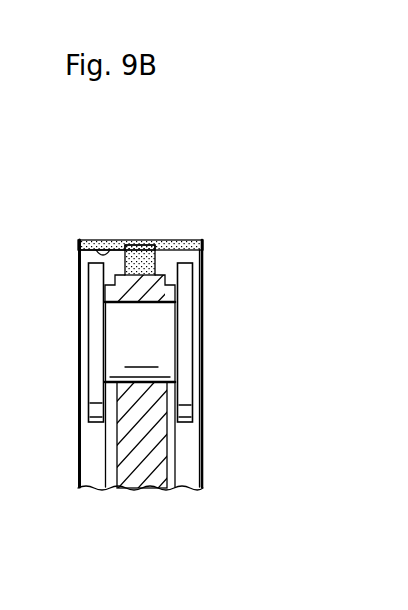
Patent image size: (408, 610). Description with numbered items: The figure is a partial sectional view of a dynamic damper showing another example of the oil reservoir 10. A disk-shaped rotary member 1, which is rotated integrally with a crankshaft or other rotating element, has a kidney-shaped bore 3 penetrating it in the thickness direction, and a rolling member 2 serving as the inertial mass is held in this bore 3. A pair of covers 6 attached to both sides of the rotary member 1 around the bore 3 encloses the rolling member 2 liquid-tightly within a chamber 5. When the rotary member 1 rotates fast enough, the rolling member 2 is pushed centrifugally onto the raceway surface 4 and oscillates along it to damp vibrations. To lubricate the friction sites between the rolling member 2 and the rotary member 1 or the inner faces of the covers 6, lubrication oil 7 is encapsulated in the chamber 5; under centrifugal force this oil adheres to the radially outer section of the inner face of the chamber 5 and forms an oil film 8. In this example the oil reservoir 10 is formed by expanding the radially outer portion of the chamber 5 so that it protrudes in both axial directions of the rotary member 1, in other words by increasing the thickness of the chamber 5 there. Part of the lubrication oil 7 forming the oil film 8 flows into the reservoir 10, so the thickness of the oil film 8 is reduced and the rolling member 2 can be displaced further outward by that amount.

The rotary member 1 is at (137, 462).
The rolling member 2 is at (193, 323).
The bore 3 is at (140, 413).
The raceway surface 4 is at (140, 302).
The chamber 5 is at (197, 387).
The cover 6 is at (205, 454).
The lubrication oil 7 is at (144, 245).
The oil film 8 is at (101, 250).
The oil reservoir 10 is at (122, 268).